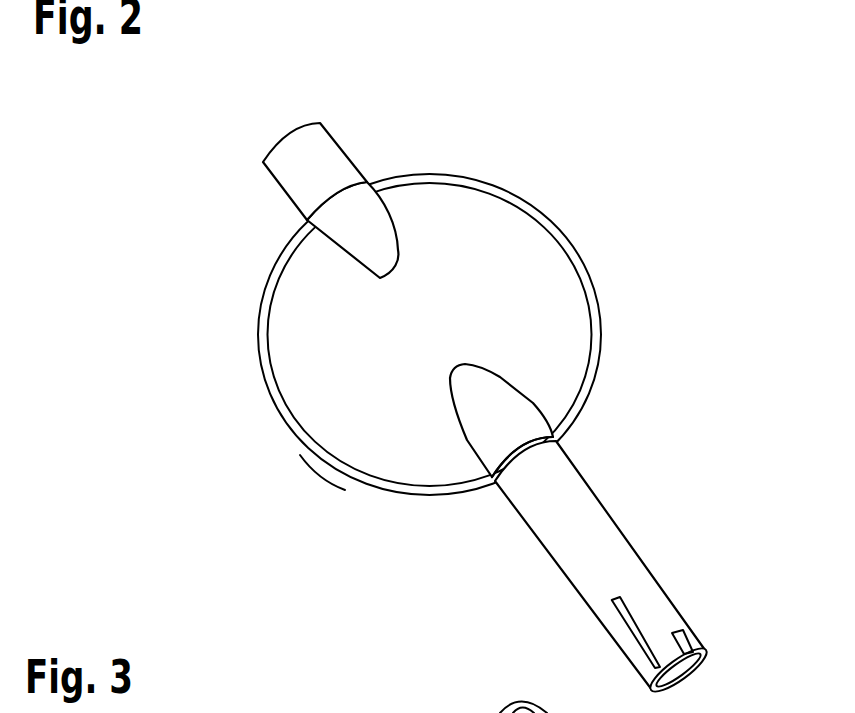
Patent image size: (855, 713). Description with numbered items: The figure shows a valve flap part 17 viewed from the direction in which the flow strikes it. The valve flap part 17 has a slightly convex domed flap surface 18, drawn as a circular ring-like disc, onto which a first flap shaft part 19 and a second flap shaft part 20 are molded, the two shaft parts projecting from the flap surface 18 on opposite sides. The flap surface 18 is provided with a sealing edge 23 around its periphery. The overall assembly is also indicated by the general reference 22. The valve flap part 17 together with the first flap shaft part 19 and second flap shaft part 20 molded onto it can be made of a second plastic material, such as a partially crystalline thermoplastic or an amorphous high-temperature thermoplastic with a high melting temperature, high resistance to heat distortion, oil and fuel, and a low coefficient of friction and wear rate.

The valve flap part 17 is at (203, 286).
The flap surface 18 is at (293, 348).
The first flap shaft part 19 is at (318, 150).
The second flap shaft part 20 is at (642, 582).
The component assembly 22 is at (607, 183).
The sealing edge 23 is at (328, 462).